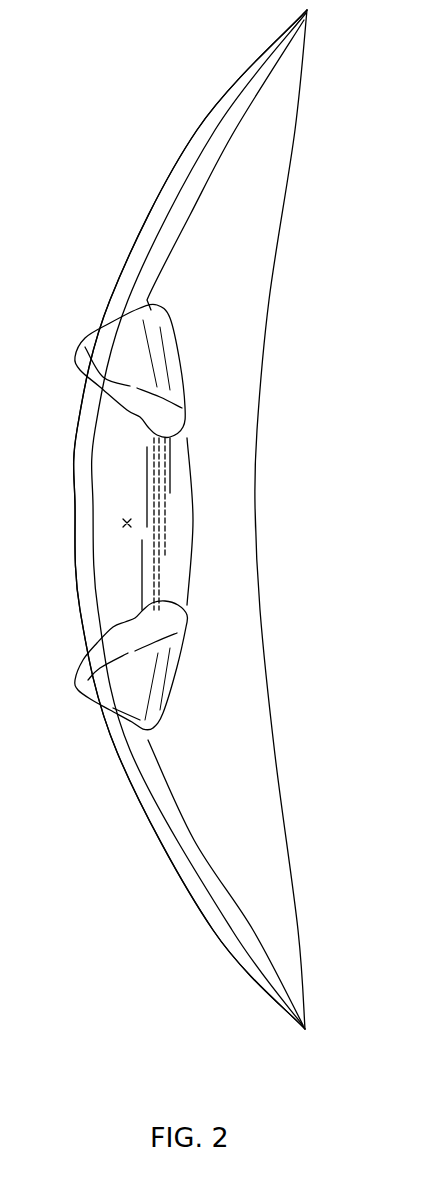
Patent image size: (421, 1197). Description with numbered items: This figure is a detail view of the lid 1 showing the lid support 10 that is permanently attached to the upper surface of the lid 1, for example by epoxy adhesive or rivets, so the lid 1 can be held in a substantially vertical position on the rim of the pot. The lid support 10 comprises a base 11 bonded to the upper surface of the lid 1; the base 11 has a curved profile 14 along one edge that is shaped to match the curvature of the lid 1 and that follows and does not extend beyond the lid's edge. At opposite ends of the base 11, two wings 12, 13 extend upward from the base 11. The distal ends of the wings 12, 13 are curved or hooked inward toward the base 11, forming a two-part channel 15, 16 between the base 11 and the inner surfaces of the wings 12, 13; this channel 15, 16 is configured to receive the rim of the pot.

The lid 1 is at (242, 70).
The lid support 10 is at (100, 490).
The base 11 is at (124, 522).
The wing 12 is at (100, 343).
The wing 13 is at (100, 688).
The curved profile 14 is at (80, 435).
The channel 15 is at (90, 387).
The channel 16 is at (120, 627).